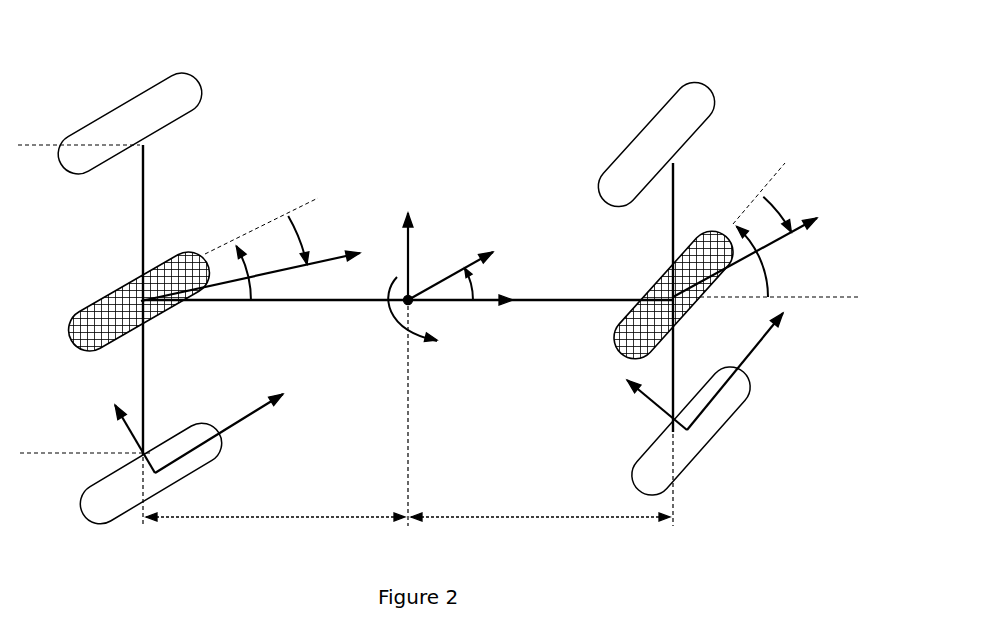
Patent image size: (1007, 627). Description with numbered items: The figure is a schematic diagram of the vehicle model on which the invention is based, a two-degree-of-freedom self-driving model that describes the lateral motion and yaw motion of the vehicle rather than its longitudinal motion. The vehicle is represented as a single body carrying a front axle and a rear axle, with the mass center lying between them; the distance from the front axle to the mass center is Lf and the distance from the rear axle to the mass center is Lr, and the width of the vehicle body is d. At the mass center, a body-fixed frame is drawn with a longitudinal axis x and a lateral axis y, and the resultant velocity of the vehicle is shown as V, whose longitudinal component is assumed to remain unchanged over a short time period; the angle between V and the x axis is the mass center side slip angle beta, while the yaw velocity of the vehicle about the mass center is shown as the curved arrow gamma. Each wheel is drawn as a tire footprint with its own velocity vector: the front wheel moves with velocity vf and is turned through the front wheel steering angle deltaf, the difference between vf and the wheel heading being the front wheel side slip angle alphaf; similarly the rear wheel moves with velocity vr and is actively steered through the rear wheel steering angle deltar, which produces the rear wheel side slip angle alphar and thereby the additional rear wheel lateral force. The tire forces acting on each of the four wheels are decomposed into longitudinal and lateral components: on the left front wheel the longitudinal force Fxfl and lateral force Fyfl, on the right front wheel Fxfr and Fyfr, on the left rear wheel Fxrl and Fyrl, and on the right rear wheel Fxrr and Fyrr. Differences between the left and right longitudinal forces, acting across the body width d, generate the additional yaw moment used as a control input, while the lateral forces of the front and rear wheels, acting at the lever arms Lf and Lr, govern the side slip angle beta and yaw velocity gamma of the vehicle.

The lateral force on rear-left wheel Fyrl is at (126, 120).
The longitudinal force on rear-left wheel Fxrl is at (240, 111).
The width of the vehicle body d is at (111, 301).
The lateral force on rear-right wheel Fyrr is at (138, 456).
The longitudinal force on rear-right wheel Fxrr is at (225, 435).
The lateral force on front-left wheel Fyfl is at (656, 125).
The longitudinal force on front-left wheel Fxfl is at (772, 66).
The longitudinal force on front-right wheel Fxfr is at (727, 363).
The lateral force on front-right wheel Fyfr is at (642, 401).
The rear wheel velocity vr is at (268, 254).
The front wheel velocity vf is at (768, 248).
The longitudinal speed of the vehicle V is at (457, 251).
The longitudinal axis x is at (524, 314).
The lateral axis y is at (421, 240).
The rear wheel steering angle deltar is at (266, 260).
The rear wheel side slip angle alphar is at (319, 233).
The front wheel steering angle deltaf is at (780, 261).
The front wheel side slip angle alphaf is at (808, 193).
The mass center side slip angle beta is at (490, 271).
The yaw velocity gamma is at (402, 315).
The distance from the rear axle to the mass center Lr is at (275, 517).
The distance from the front axle to the mass center Lf is at (540, 517).